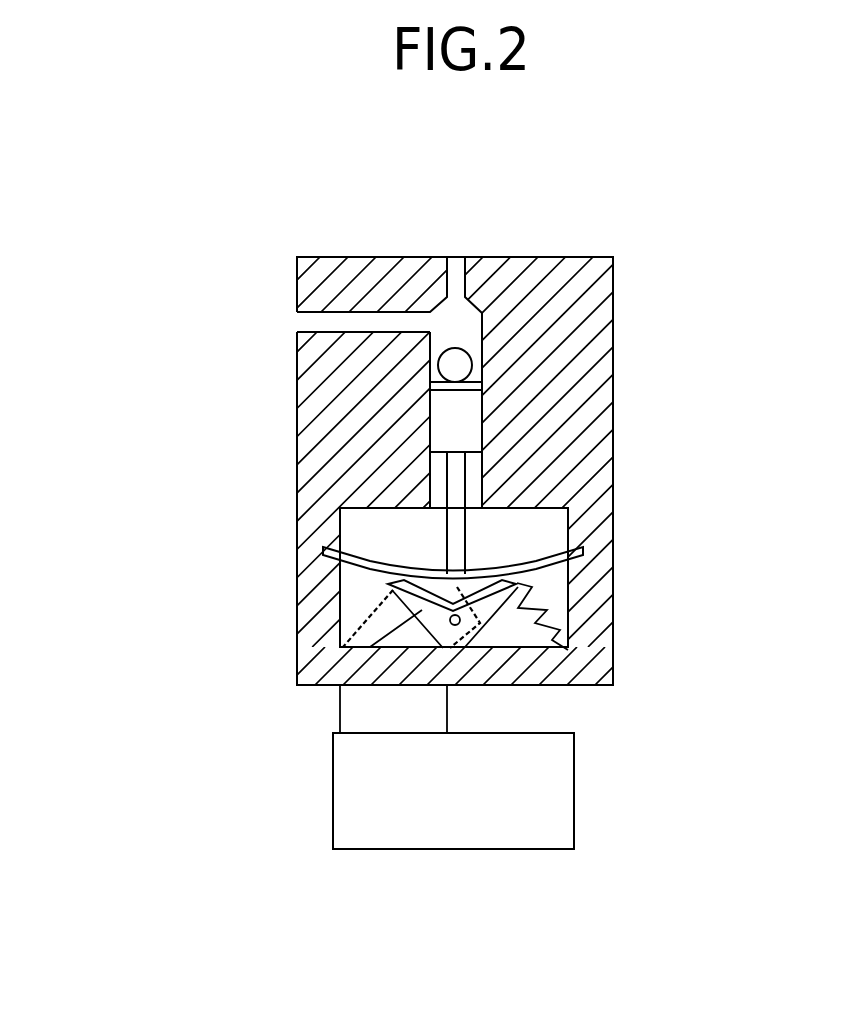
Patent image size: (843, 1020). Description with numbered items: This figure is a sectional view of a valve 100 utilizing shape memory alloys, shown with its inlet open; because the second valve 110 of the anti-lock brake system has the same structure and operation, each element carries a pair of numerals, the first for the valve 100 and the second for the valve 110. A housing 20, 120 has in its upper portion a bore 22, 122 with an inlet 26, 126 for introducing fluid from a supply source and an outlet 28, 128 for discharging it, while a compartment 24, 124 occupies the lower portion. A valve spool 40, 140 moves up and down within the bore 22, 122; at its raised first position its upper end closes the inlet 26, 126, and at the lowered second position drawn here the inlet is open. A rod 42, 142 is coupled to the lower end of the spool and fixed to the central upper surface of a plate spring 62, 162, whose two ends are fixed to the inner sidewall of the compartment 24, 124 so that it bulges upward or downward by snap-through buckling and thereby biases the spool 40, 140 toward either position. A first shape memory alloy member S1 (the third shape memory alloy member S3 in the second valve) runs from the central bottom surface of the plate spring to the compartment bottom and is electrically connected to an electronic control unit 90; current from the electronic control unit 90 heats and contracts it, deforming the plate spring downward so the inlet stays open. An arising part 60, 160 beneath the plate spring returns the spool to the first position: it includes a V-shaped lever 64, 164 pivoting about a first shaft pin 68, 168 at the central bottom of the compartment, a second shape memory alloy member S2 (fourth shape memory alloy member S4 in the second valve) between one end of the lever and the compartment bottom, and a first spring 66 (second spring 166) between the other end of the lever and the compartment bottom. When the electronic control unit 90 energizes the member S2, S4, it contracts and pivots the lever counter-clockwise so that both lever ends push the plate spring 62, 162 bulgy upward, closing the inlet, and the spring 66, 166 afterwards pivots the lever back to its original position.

The valve 100 is at (570, 406).
The second valve 110 is at (645, 242).
The housing 20 is at (421, 471).
The second housing 120 is at (613, 338).
The bore 22 is at (521, 344).
The second bore 122 is at (533, 258).
The inlet 26 is at (386, 235).
The second outlet 128 is at (457, 258).
The second inlet 126 is at (276, 297).
The outlet 28 is at (303, 322).
The second valve spool 140 is at (600, 400).
The valve spool 40 is at (472, 422).
The second rod 142 is at (614, 513).
The rod 42 is at (457, 490).
The second compartment 124 is at (560, 576).
The compartment 24 is at (547, 528).
The plate spring 62 is at (375, 510).
The second plate spring 162 is at (325, 548).
The arising part 60 is at (326, 607).
The pressure sensor actuator 160 is at (370, 591).
The second spring 166 is at (649, 616).
The first spring 66 is at (543, 608).
The second shape memory alloy member S2 is at (264, 630).
The fourth shape memory alloy member S4 is at (352, 620).
The third shape memory alloy member S3 is at (604, 655).
The first shape memory alloy member S1 is at (485, 612).
The pivot 168 is at (600, 726).
The first shaft pin 68 is at (458, 625).
The lever 64 is at (283, 729).
The second lever 164 is at (327, 685).
The electronic control unit 90 is at (453, 843).